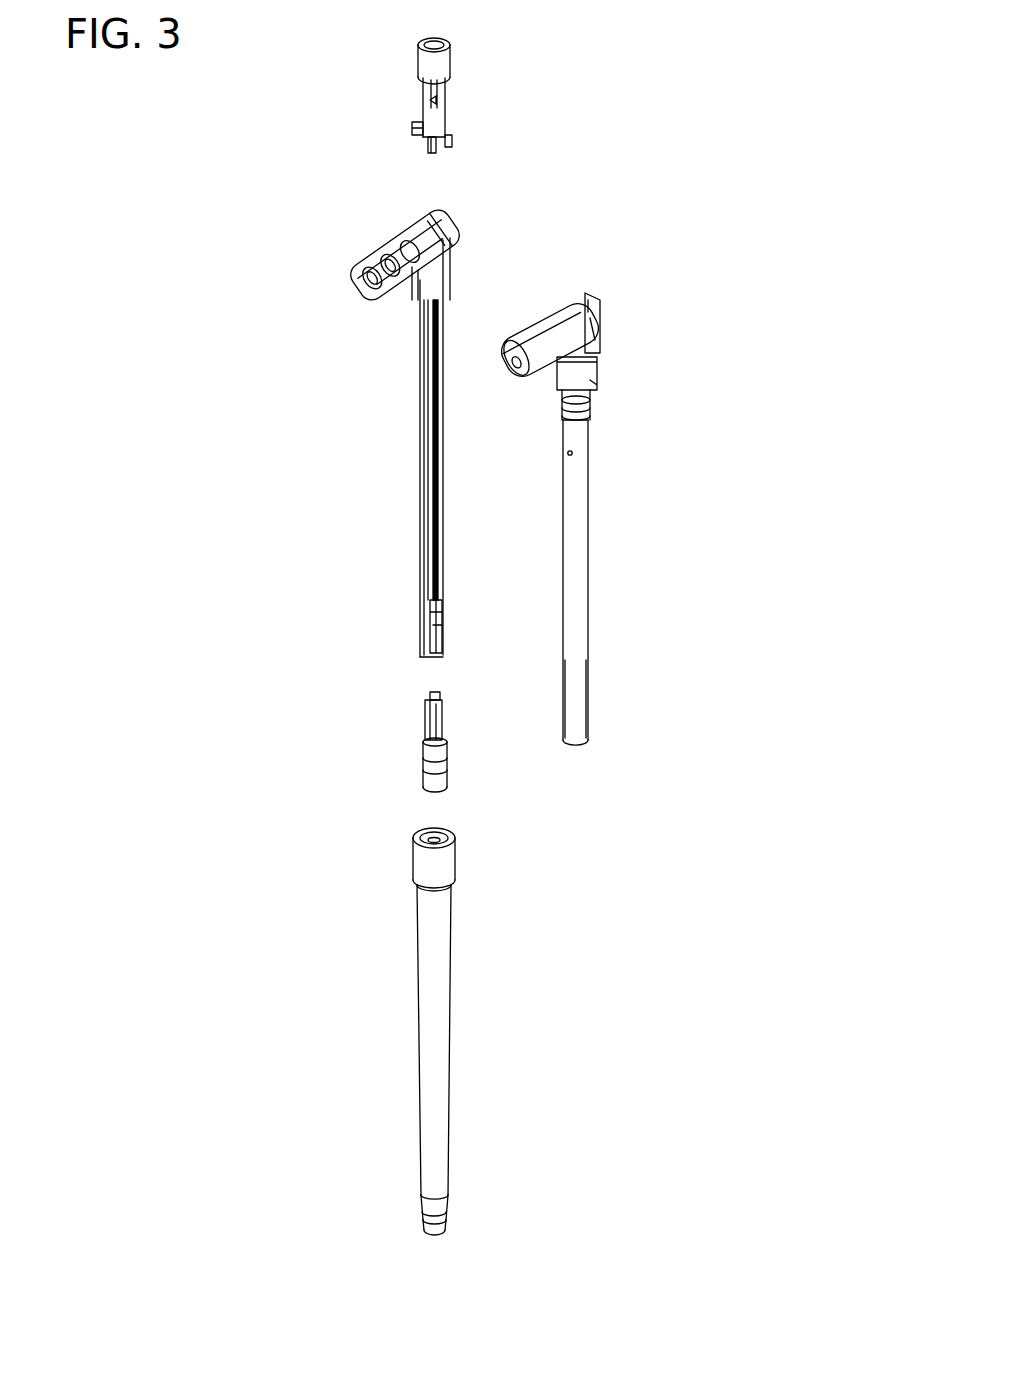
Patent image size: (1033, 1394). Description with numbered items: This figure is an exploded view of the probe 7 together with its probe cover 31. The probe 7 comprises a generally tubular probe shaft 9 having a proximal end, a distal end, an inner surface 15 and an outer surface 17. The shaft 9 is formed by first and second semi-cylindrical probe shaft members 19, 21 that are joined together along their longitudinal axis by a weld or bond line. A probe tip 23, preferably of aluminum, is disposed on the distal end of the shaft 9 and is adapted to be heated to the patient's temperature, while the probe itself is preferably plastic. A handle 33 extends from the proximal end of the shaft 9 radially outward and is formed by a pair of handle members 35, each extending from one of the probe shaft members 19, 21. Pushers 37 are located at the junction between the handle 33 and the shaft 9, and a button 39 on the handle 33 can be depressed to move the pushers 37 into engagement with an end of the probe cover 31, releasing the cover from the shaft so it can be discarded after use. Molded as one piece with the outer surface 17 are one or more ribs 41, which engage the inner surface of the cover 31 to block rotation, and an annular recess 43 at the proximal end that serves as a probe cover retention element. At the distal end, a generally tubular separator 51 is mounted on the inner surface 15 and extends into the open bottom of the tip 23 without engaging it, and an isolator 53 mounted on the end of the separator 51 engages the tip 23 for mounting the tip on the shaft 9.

The probe 7 is at (715, 163).
The probe shaft 9 is at (675, 560).
The inner surface 15 is at (440, 482).
The outer surface 17 is at (580, 498).
The first probe shaft member 19 is at (578, 683).
The second probe shaft member 21 is at (420, 428).
The probe tip 23 is at (448, 770).
The probe cover 31 is at (435, 1068).
The handle 33 is at (381, 223).
The handle members 35 is at (356, 258).
The pushers 37 is at (413, 132).
The button 39 is at (446, 70).
The ribs 41 is at (574, 455).
The annular recess 43 is at (590, 413).
The separator 51 is at (428, 727).
The isolator 53 is at (422, 758).